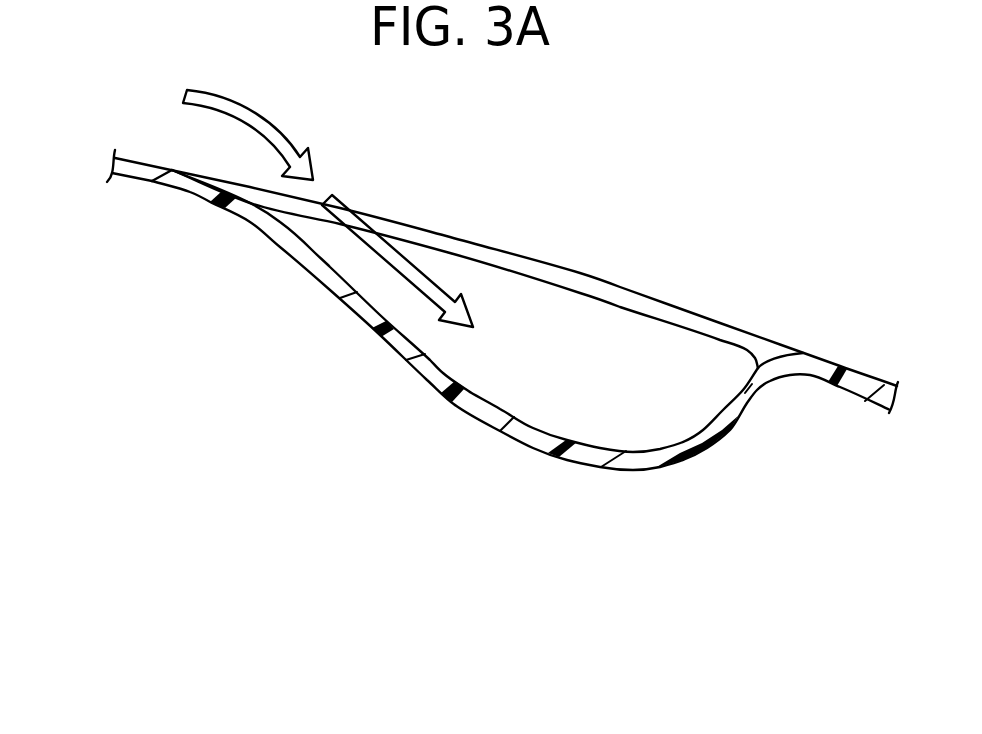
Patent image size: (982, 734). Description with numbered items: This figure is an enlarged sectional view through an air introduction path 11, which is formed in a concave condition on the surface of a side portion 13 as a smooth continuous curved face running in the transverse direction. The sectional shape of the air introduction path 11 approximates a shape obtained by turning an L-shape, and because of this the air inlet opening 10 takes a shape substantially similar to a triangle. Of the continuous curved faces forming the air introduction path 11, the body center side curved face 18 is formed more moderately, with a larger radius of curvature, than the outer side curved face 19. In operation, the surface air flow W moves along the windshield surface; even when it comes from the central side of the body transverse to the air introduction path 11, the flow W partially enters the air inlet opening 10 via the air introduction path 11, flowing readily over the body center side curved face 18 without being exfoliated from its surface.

The air inlet opening 10 is at (633, 327).
The air introduction path 11 is at (568, 444).
The side portion 13 is at (128, 178).
The body center side curved face 18 is at (451, 380).
The outer side curved face 19 is at (698, 435).
The surface air flow W is at (305, 197).